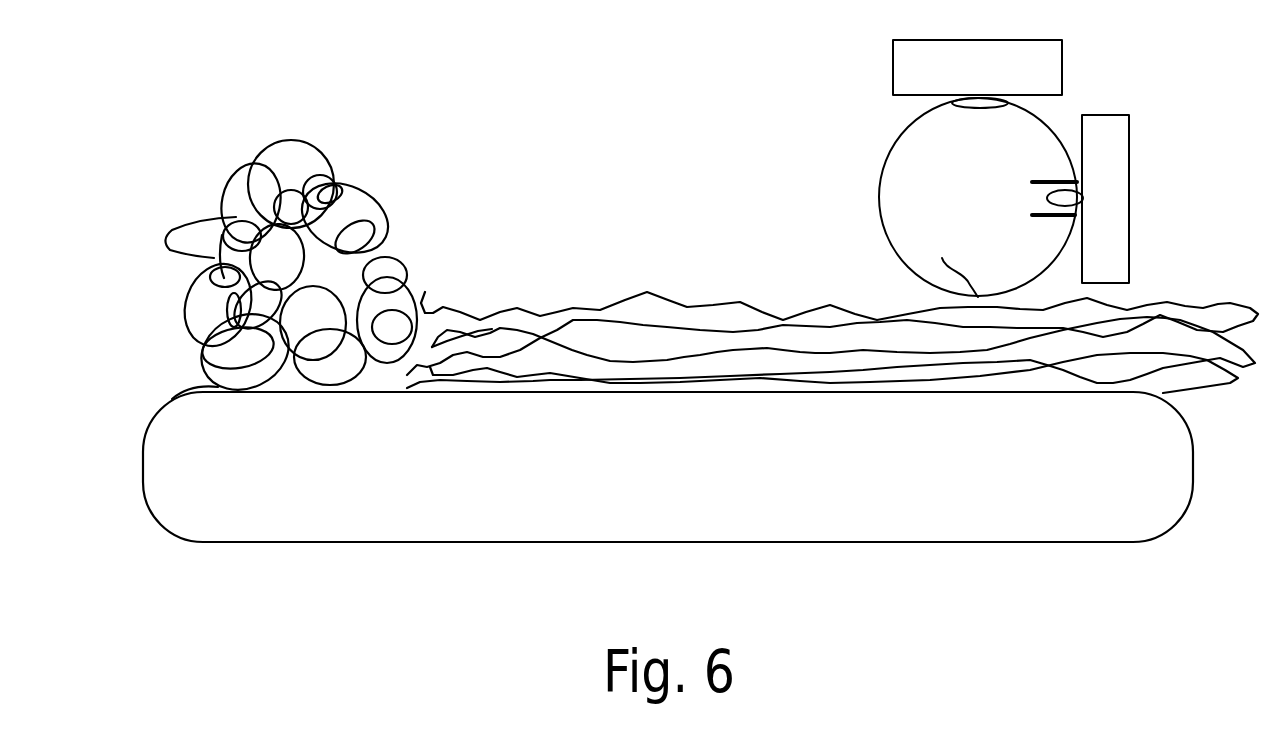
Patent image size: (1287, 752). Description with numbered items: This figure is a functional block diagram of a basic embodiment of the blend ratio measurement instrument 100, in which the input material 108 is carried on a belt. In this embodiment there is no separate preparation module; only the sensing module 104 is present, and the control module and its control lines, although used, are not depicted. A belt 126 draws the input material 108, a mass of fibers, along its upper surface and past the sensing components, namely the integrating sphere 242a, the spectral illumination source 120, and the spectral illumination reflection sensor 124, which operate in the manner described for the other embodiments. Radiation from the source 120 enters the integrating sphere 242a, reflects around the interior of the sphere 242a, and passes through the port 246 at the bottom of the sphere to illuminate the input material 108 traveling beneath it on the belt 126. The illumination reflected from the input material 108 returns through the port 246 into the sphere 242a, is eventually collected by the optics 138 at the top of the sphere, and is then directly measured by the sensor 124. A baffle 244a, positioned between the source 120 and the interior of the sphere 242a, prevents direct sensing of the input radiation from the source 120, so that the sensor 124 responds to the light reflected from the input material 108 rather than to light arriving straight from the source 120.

The blend ratio measurement instrument 100 is at (205, 636).
The sensing module 104 is at (681, 78).
The input material 108 is at (405, 259).
The spectral illumination source 120 is at (1105, 199).
The spectral illumination reflection sensor 124 is at (977, 67).
The belt 126 is at (668, 467).
The optics 138 is at (970, 110).
The integrating sphere 242a is at (1030, 112).
The baffle 244a is at (1032, 182).
The port 246 is at (946, 261).